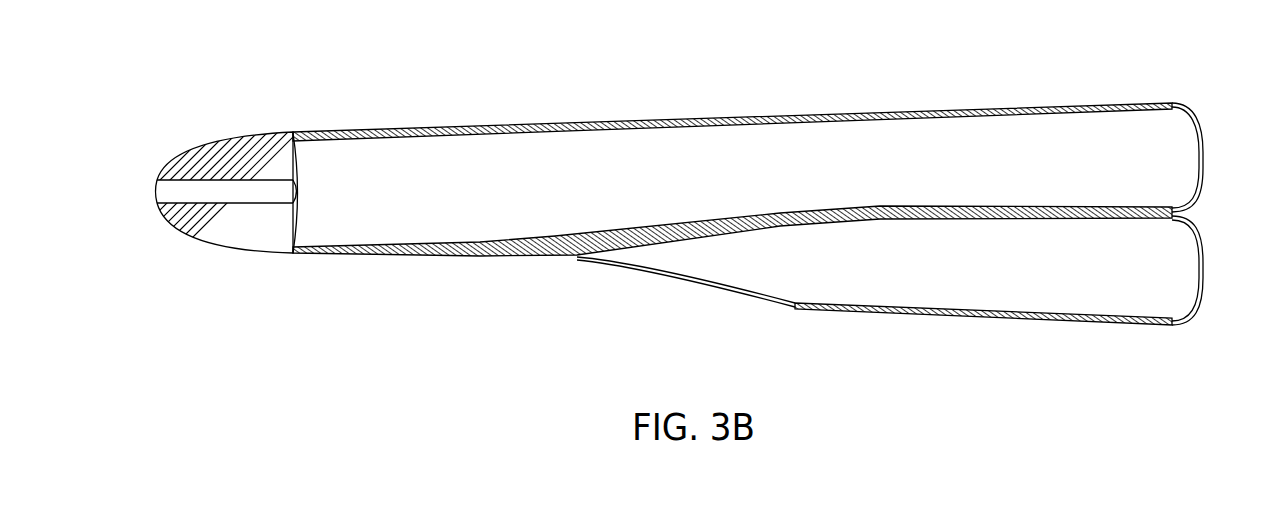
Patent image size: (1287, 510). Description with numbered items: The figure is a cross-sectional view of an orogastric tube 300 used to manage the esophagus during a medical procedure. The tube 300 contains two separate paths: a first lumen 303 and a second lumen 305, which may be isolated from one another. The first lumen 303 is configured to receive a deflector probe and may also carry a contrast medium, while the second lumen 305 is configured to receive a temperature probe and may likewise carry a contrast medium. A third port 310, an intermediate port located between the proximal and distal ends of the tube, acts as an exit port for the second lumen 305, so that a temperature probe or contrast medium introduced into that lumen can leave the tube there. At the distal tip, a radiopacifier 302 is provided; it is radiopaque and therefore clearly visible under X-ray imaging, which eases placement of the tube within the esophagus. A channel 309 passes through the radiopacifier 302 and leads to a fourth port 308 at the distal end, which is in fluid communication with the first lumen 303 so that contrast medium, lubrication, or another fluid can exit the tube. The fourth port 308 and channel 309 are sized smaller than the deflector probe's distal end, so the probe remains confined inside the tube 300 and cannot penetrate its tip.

The orogastric (OG) tube 300 is at (1081, 66).
The radiopacifier 302 is at (240, 162).
The first lumen 303 is at (808, 174).
The second lumen 305 is at (877, 267).
The fourth port 308 is at (140, 186).
The channel 309 is at (212, 190).
The third port 310 is at (660, 281).